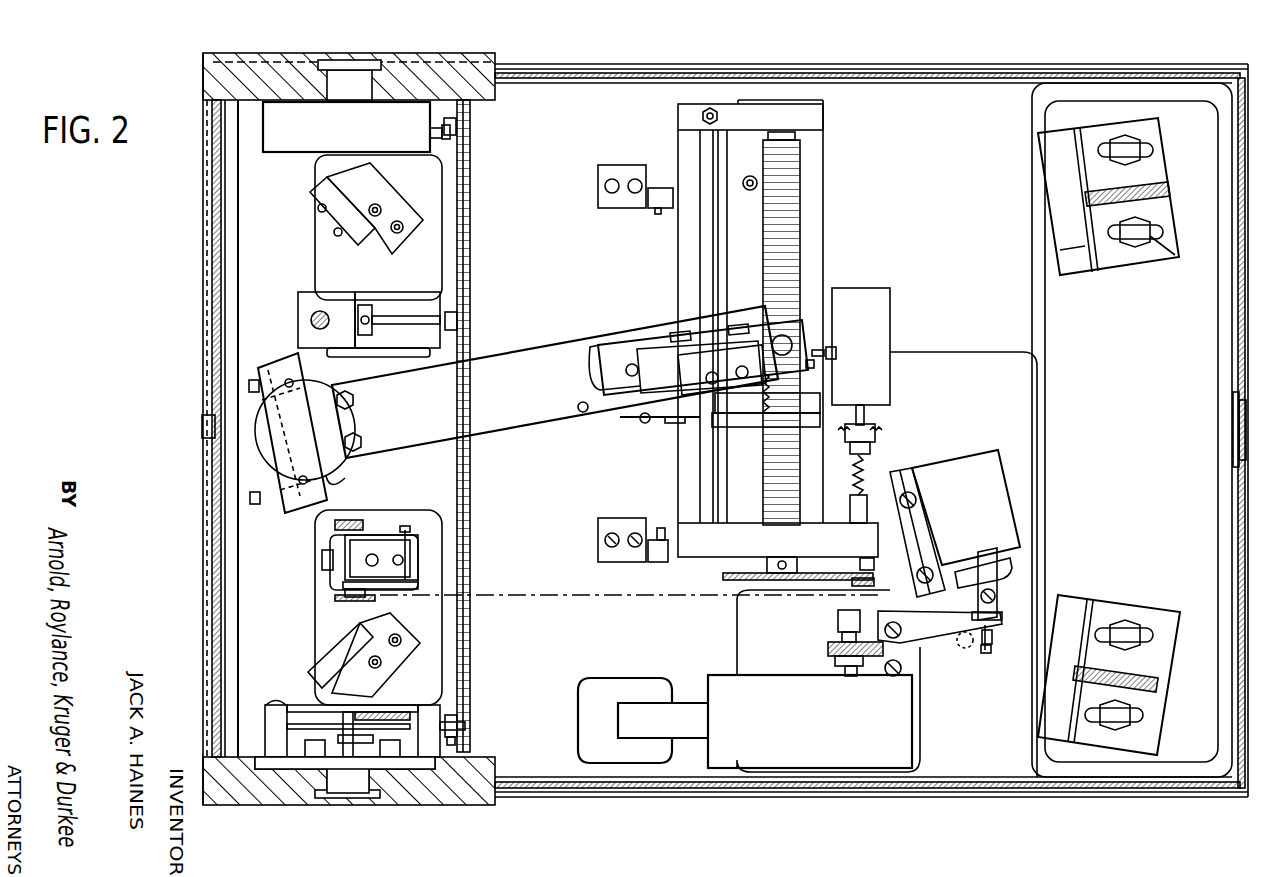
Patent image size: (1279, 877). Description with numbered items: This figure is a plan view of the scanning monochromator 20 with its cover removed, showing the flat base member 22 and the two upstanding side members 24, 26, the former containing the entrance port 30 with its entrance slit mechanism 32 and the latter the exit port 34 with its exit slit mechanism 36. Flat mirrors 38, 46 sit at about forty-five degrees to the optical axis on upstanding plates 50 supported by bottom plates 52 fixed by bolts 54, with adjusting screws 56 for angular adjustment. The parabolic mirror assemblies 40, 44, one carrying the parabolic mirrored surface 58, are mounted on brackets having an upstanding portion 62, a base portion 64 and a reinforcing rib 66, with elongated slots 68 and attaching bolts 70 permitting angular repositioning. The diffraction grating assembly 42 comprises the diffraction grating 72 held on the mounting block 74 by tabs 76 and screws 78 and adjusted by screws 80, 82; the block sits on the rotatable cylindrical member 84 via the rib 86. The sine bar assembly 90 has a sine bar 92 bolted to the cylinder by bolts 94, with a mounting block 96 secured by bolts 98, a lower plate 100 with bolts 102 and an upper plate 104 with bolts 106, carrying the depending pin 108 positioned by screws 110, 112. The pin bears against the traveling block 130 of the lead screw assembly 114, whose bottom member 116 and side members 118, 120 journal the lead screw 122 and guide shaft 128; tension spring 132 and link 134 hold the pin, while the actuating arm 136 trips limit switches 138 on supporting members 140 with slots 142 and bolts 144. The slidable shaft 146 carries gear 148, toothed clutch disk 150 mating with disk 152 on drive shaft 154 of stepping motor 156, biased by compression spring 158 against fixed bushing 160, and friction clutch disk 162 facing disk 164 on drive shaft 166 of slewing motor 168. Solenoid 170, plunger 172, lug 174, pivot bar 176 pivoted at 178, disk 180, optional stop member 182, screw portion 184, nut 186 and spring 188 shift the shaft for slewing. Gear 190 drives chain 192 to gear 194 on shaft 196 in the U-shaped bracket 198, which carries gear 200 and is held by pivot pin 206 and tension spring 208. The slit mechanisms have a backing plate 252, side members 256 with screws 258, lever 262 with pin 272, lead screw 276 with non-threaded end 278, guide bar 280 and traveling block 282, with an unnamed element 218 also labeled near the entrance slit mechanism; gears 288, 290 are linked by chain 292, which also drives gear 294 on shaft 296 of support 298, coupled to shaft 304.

The scanning monochromator 20 is at (746, 50).
The flat base member 22 is at (1061, 430).
The side member 24 is at (430, 80).
The side member 26 is at (462, 790).
The entrance port 30 is at (357, 70).
The entrance slit mechanism 32 is at (268, 155).
The exit port 34 is at (335, 780).
The exit slit mechanism 36 is at (293, 689).
The flat mirror 38 is at (330, 183).
The parabolic mirror assembly 40 is at (1120, 262).
The diffraction grating assembly 42 is at (262, 512).
The parabolic mirror assembly 44 is at (1158, 588).
The flat mirror 46 is at (348, 648).
The upstanding plate 50 is at (365, 235).
The bottom plate 52 is at (392, 240).
The bolt 54 is at (380, 205).
The adjusting screw 56 is at (320, 222).
The parabolic mirrored surface 58 is at (1045, 198).
The upstanding portion 62 is at (1078, 262).
The base portion 64 is at (1160, 250).
The reinforcing rib 66 is at (1158, 180).
The elongated slot 68 is at (1155, 232).
The attaching bolt 70 is at (1138, 140).
The diffraction grating 72 is at (312, 388).
The mounting block 74 is at (278, 368).
The tab 76 is at (340, 478).
The screw 78 is at (325, 490).
The adjusting screw 80 is at (250, 498).
The adjusting screw 82 is at (248, 386).
The rotatable cylindrical member 84 is at (270, 440).
The rib 86 is at (362, 428).
The sine bar assembly 90 is at (536, 428).
The sine bar 92 is at (522, 352).
The attaching bolt 94 is at (360, 400).
The mounting block 96 is at (655, 319).
The bolt 98 is at (680, 330).
The lower plate 100 is at (610, 340).
The bolt 102 is at (577, 367).
The upper plate 104 is at (640, 378).
The bolt 106 is at (695, 377).
The depending pin 108 is at (790, 343).
The screw 110 is at (838, 353).
The screw 112 is at (818, 366).
The lead screw assembly 114 is at (856, 233).
The bottom member 116 is at (812, 202).
The side member 118 is at (810, 118).
The side member 120 is at (778, 540).
The lead screw 122 is at (800, 160).
The guide shaft 128 is at (712, 240).
The traveling block 130 is at (767, 406).
The tension spring 132 is at (784, 396).
The attaching link 134 is at (758, 434).
The actuating arm 136 is at (660, 425).
The limit switch 138 is at (655, 188).
The supporting member 140 is at (620, 522).
The slot 142 is at (605, 548).
The bolt 144 is at (612, 538).
The slidable shaft 146 is at (852, 478).
The gear 148 is at (870, 567).
The toothed clutch disk 150 is at (885, 448).
The toothed clutch disk 152 is at (878, 432).
The drive shaft 154 is at (885, 420).
The stepping motor 156 is at (890, 323).
The compression spring 158 is at (918, 484).
The fixed bushing 160 is at (855, 520).
The friction clutch disk 162 is at (828, 648).
The friction clutch disk 164 is at (830, 660).
The drive shaft 166 is at (848, 670).
The slewing motor 168 is at (749, 681).
The solenoid 170 is at (966, 519).
The solenoid plunger 172 is at (1000, 585).
The lug 174 is at (1005, 610).
The pivot bar 176 is at (935, 625).
The pivot 178 is at (888, 678).
The disk 180 is at (838, 620).
The stop member 182 is at (962, 646).
The screw portion 184 is at (980, 650).
The nut 186 is at (992, 650).
The compression spring 188 is at (992, 635).
The gear 190 is at (870, 582).
The driving chain 192 is at (612, 598).
The gear 194 is at (340, 596).
The shaft 196 is at (345, 586).
The U-shaped bracket 198 is at (335, 548).
The gear 200 is at (358, 520).
The pivot pin 206 is at (415, 548).
The tension spring 208 is at (322, 560).
The screw 218 is at (432, 128).
The backing plate 252 is at (408, 770).
The side member 256 is at (275, 722).
The screw 258 is at (272, 703).
The lever 262 is at (370, 745).
The pin 272 is at (350, 756).
The lead screw 276 is at (385, 712).
The non-threaded end 278 is at (452, 712).
The guide bar 280 is at (430, 700).
The traveling block member 282 is at (330, 740).
The gear 288 is at (472, 133).
The gear 290 is at (470, 728).
The driving chain 292 is at (472, 494).
The gear 294 is at (470, 318).
The shaft 296 is at (398, 312).
The support 298 is at (410, 340).
The shaft 304 is at (318, 320).